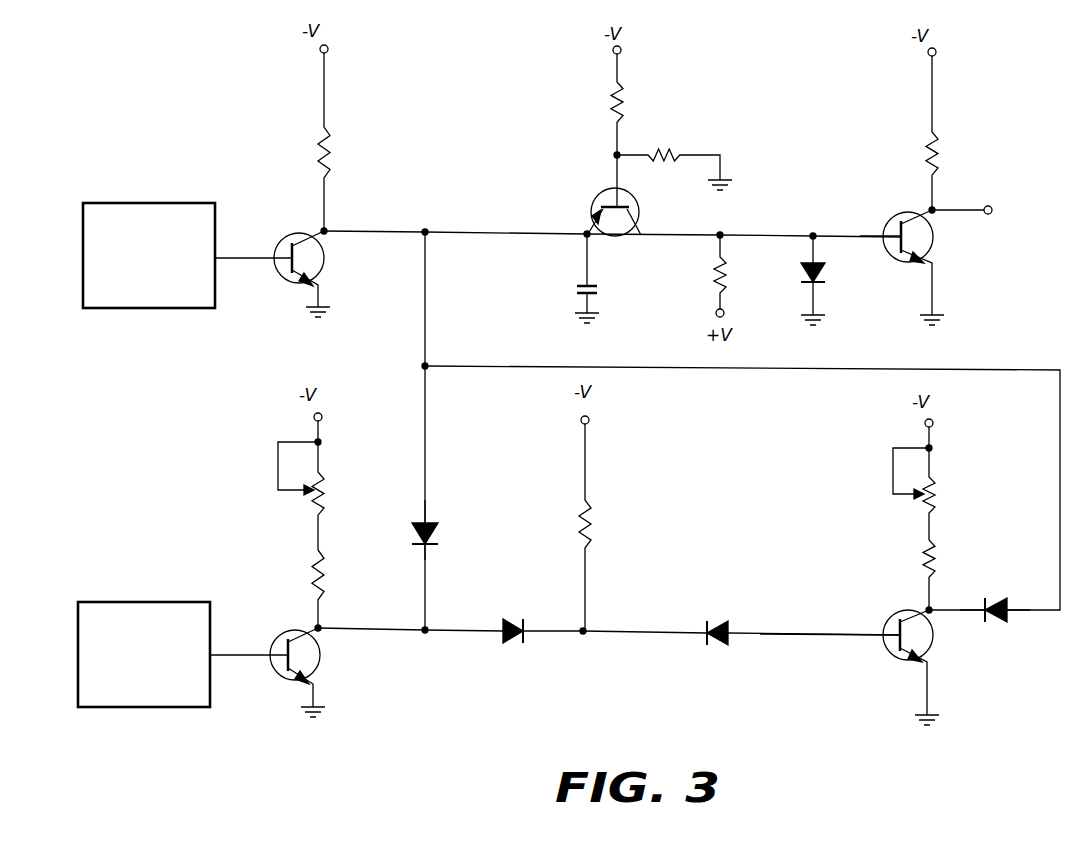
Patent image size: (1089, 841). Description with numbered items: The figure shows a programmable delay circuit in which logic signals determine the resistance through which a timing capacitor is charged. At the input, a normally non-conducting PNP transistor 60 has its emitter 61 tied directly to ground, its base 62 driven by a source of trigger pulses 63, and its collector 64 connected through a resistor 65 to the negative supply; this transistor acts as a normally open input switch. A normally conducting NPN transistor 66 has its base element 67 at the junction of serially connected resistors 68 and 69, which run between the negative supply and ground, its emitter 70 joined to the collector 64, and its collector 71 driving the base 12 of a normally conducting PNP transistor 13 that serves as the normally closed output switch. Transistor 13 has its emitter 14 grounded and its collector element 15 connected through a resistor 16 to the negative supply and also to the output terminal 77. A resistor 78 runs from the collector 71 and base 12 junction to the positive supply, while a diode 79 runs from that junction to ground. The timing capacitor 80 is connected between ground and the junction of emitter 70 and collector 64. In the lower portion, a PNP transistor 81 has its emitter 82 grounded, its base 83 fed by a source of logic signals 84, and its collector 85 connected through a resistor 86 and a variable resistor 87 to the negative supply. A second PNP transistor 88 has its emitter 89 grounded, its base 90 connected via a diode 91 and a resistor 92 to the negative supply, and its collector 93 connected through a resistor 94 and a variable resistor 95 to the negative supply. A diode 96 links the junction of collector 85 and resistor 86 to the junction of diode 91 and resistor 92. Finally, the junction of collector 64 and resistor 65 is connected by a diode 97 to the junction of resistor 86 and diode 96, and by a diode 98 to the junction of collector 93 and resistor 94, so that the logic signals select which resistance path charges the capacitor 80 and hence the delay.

The PNP transistor 60 is at (343, 273).
The emitter 61 is at (321, 296).
The base 62 is at (244, 250).
The source of trigger pulses 63 is at (156, 203).
The collector 64 is at (301, 242).
The resistor 65 is at (329, 133).
The NPN transistor 66 is at (610, 268).
The base element 67 is at (610, 172).
The resistor 68 is at (623, 92).
The resistor 69 is at (663, 156).
The emitter 70 is at (591, 232).
The collector 71 is at (637, 228).
The resistor 78 is at (712, 262).
The diode 79 is at (803, 275).
The timing capacitor 80 is at (575, 290).
The base 12 is at (893, 228).
The PNP transistor 13 is at (951, 247).
The emitter 14 is at (930, 277).
The collector element 15 is at (912, 222).
The resistor 16 is at (940, 135).
The output terminal 77 is at (995, 212).
The PNP transistor 81 is at (338, 668).
The emitter 82 is at (322, 695).
The base 83 is at (245, 648).
The source of logic signals 84 is at (145, 603).
The collector 85 is at (305, 638).
The resistor 86 is at (310, 556).
The variable resistor 87 is at (325, 483).
The PNP transistor 88 is at (951, 647).
The emitter 89 is at (930, 690).
The base 90 is at (823, 633).
The diode 91 is at (718, 645).
The resistor 92 is at (592, 513).
The collector 93 is at (908, 617).
The resistor 94 is at (935, 560).
The variable resistor 95 is at (935, 485).
The diode 96 is at (517, 622).
The diode 97 is at (437, 530).
The diode 98 is at (997, 600).